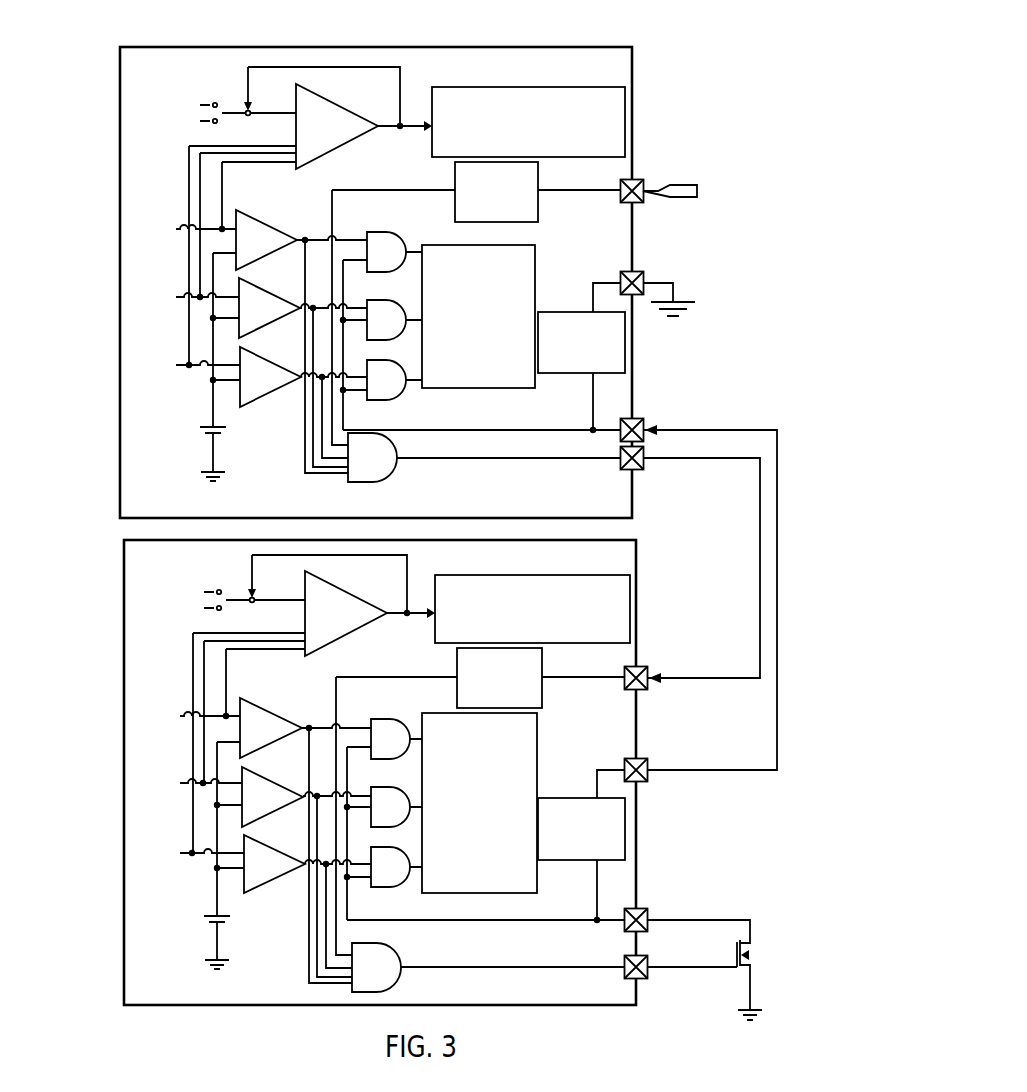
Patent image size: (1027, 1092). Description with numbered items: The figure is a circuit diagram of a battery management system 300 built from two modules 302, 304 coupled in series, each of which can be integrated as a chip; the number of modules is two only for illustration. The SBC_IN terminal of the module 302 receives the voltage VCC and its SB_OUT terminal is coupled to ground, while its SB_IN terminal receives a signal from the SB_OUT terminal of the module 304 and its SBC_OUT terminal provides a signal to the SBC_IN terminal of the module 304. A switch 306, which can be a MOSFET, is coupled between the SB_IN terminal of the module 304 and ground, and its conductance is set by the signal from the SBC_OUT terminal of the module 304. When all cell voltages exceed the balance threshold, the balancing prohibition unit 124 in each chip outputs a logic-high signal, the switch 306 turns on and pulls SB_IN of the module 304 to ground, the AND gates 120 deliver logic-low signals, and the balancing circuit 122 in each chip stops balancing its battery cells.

The battery management system 300 is at (119, 74).
The module 302 is at (120, 318).
The module 304 is at (124, 781).
The AND gate 120 is at (375, 272).
The balancing circuit 122 is at (443, 388).
The balancing prohibition unit 124 is at (386, 480).
The switch 306 is at (750, 925).